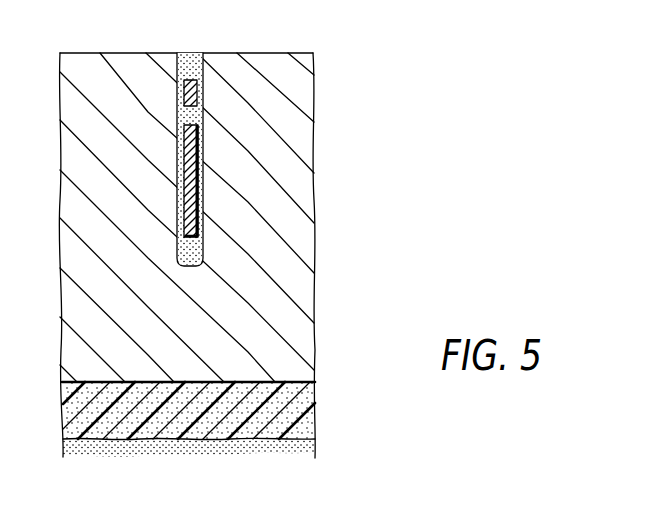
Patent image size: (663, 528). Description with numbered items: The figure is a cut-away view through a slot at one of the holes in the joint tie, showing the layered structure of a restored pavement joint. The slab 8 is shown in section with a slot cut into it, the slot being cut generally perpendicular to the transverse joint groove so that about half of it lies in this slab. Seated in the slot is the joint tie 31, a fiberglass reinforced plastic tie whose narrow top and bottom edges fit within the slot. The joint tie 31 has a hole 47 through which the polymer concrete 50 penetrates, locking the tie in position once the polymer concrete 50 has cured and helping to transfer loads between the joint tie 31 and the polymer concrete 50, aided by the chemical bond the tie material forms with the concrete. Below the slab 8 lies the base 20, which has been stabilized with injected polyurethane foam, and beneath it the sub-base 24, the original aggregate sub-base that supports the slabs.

The slab 8 is at (293, 238).
The joint tie 31 is at (203, 73).
The hole 47 is at (203, 112).
The polymer concrete 50 is at (188, 53).
The base 20 is at (310, 403).
The sub-base 24 is at (308, 450).